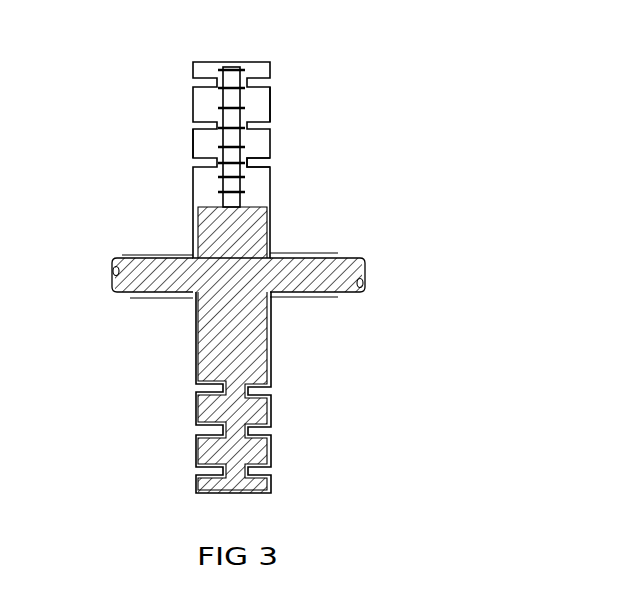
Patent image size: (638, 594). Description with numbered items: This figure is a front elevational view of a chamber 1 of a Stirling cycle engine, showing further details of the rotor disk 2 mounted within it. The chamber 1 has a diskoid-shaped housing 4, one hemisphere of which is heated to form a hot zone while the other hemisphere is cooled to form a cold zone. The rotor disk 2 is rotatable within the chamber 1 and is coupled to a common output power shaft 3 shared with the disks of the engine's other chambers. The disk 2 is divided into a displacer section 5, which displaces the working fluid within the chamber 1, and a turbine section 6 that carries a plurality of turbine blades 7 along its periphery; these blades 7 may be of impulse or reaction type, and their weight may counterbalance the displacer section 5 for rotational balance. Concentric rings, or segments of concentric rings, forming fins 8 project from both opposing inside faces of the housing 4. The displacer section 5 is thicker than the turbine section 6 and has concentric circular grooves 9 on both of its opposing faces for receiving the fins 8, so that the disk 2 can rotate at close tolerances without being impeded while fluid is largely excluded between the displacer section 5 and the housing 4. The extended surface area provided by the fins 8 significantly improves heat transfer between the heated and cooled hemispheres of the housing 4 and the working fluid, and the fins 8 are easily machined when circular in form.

The chamber 1 is at (267, 138).
The rotor disk 2 is at (217, 316).
The output power shaft 3 is at (352, 293).
The housing 4 is at (192, 150).
The displacer section 5 is at (253, 235).
The turbine section 6 is at (267, 102).
The turbine blades 7 is at (220, 92).
The fins 8 is at (267, 177).
The concentric circular grooves 9 is at (250, 430).